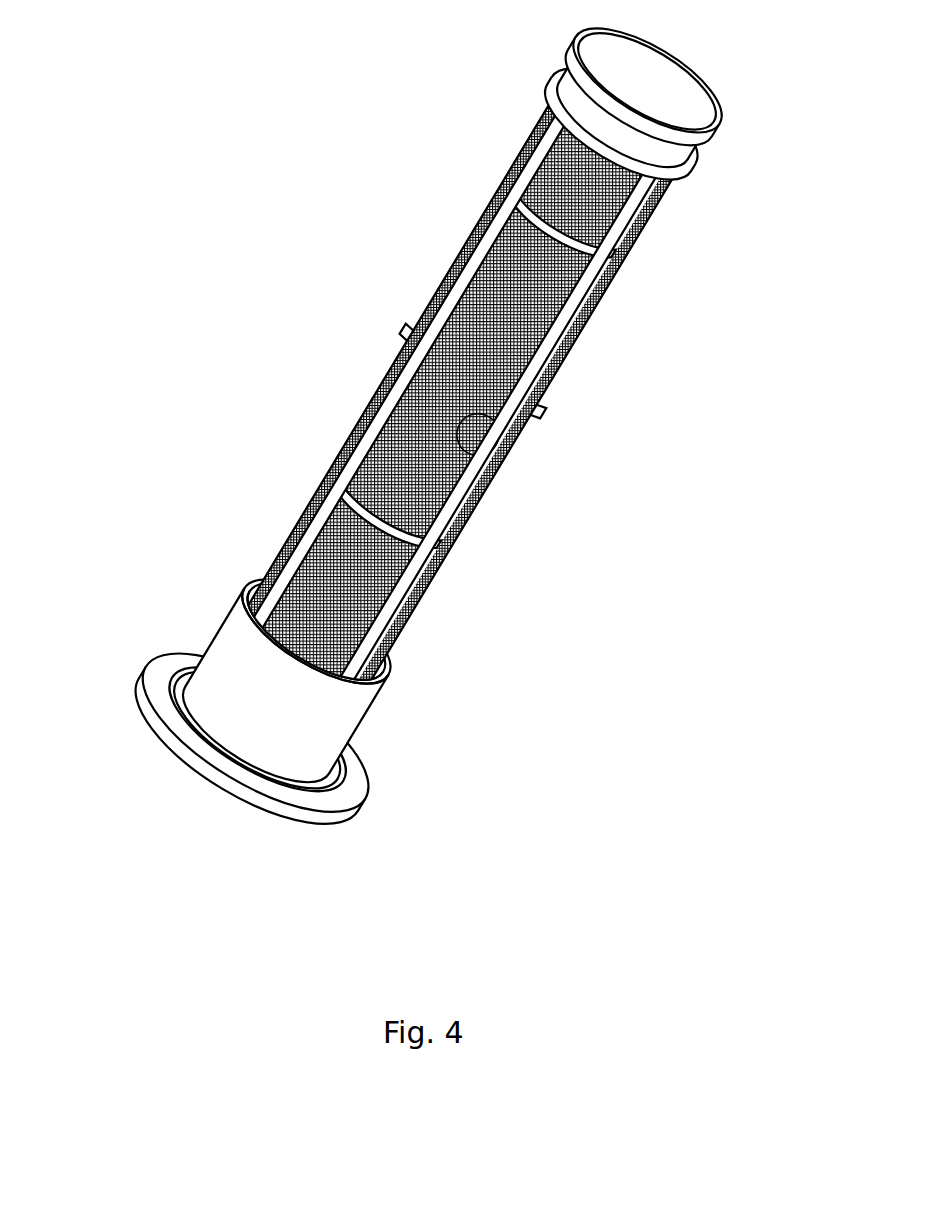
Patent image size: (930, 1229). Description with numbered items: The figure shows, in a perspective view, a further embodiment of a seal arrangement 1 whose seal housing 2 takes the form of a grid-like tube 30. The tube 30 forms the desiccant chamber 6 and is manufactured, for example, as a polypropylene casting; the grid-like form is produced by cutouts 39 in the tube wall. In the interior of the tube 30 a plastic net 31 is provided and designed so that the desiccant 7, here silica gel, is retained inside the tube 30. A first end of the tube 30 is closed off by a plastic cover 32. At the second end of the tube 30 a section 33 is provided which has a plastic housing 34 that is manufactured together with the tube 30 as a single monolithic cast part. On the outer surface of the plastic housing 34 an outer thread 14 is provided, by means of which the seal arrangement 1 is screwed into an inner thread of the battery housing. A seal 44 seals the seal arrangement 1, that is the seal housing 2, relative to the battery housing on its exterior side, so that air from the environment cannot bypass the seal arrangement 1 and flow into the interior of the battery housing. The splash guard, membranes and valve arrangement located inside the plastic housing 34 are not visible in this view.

The seal arrangement 1 is at (414, 431).
The seal housing 2 is at (492, 422).
The grid-like tube 30 is at (492, 422).
The desiccant chamber 6 is at (492, 422).
The desiccant 7 is at (492, 422).
The plastic net 31 is at (548, 314).
The cutouts 39 is at (465, 463).
The plastic cover 32 is at (668, 98).
The outer thread 14 is at (223, 622).
The section 33 is at (242, 694).
The plastic housing 34 is at (180, 737).
The seal 44 is at (350, 782).